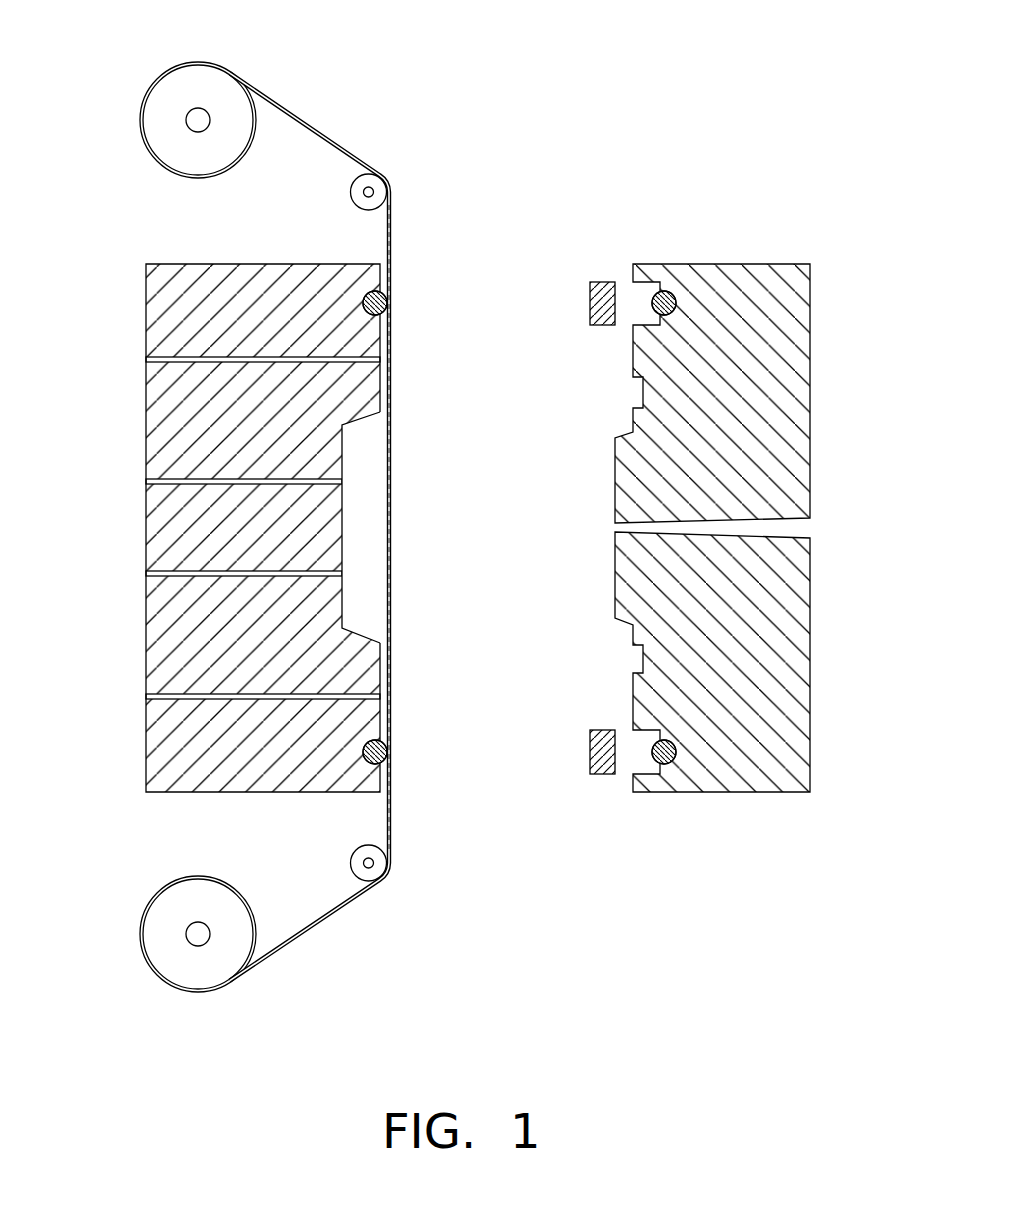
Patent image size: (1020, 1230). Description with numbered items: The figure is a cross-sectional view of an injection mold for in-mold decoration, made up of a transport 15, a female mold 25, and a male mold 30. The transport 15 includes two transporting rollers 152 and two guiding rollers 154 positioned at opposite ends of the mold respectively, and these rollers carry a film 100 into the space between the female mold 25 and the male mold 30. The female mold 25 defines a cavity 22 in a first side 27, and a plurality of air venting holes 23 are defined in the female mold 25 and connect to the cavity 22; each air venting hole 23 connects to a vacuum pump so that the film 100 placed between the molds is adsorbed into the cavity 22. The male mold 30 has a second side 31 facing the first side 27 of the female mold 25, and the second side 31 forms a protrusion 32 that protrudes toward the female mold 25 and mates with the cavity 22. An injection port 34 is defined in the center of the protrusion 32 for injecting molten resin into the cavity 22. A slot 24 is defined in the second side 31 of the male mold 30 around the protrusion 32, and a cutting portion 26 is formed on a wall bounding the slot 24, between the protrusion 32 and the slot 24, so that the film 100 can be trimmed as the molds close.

The transport 15 is at (309, 107).
The film 100 is at (327, 138).
The transporting roller 152 is at (207, 82).
The guiding roller 154 is at (378, 186).
The female mold 25 is at (254, 528).
The first side 27 is at (381, 341).
The air venting hole 23 is at (152, 482).
The cavity 22 is at (357, 488).
The male mold 30 is at (703, 528).
The slot 24 is at (640, 394).
The cutting portion 26 is at (633, 412).
The injection port 34 is at (800, 528).
The protrusion 32 is at (615, 578).
The second side 31 is at (633, 698).